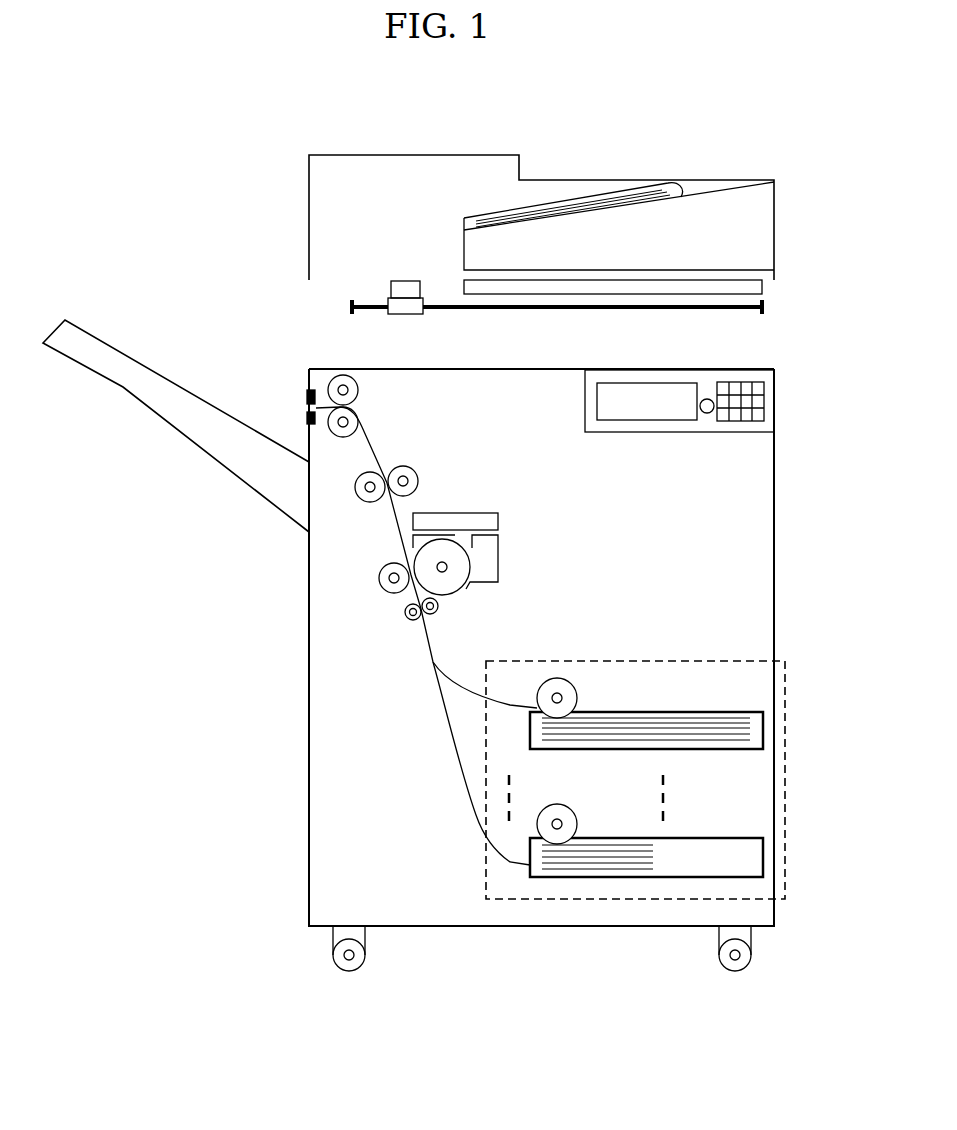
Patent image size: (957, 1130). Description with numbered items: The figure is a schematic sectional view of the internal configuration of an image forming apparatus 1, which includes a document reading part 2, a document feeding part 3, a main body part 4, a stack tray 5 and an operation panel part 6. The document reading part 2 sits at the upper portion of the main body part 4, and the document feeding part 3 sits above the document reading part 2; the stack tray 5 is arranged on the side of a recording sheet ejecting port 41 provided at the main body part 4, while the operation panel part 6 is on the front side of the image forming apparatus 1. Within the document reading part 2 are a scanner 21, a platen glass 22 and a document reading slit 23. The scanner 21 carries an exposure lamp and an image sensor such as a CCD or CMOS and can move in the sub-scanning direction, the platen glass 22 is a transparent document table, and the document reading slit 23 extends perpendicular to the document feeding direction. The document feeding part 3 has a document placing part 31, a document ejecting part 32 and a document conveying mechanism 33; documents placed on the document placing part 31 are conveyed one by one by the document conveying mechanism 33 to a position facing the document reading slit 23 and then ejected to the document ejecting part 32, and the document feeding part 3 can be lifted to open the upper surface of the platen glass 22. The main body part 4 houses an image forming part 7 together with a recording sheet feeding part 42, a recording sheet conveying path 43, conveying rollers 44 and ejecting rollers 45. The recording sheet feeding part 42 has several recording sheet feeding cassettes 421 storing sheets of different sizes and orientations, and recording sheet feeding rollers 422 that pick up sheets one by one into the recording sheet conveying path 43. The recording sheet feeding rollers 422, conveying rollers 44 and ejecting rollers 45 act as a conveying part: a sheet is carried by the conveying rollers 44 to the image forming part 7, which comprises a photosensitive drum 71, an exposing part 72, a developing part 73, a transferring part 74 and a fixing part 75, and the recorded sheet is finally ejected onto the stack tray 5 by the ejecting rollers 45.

The image forming apparatus 1 is at (240, 178).
The document reading part 2 is at (295, 317).
The scanner 21 is at (410, 316).
The platen glass 22 is at (765, 290).
The document reading slit 23 is at (410, 281).
The document feeding part 3 is at (295, 218).
The document placing part 31 is at (670, 185).
The document ejecting part 32 is at (643, 270).
The document conveying mechanism 33 is at (415, 160).
The main body part 4 is at (789, 622).
The recording sheet ejecting port 41 is at (307, 408).
The recording sheet feeding part 42 is at (787, 718).
The recording sheet feeding cassette 421 is at (693, 712).
The recording sheet feeding roller 422 is at (577, 699).
The recording sheet conveying path 43 is at (405, 620).
The conveying rollers 44 is at (421, 606).
The ejecting rollers 45 is at (358, 390).
The stack tray 5 is at (195, 468).
The operation panel part 6 is at (775, 388).
The image forming part 7 is at (588, 514).
The photosensitive drum 71 is at (450, 593).
The exposing part 72 is at (498, 517).
The developing part 73 is at (498, 552).
The transferring part 74 is at (380, 578).
The fixing part 75 is at (418, 480).